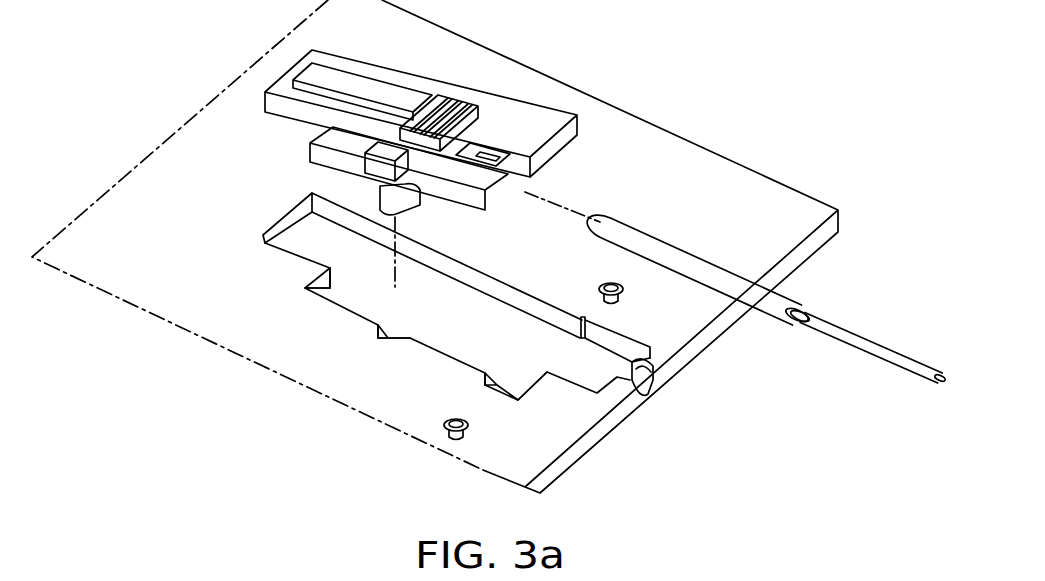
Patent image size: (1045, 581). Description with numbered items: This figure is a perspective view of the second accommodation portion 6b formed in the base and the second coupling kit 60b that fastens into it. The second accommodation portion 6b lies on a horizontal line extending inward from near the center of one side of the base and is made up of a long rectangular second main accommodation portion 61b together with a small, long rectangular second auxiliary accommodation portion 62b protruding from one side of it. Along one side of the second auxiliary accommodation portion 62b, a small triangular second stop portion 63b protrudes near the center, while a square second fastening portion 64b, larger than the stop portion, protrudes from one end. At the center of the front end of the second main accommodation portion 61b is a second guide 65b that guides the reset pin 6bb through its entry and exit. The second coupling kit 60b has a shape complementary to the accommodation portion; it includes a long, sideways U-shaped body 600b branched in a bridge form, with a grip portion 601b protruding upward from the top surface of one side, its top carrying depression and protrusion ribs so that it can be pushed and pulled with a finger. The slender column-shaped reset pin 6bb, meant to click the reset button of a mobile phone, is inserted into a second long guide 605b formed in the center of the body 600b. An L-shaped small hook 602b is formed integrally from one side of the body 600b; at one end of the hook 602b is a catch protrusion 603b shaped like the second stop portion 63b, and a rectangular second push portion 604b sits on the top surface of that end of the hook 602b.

The second accommodation portion 6b is at (250, 255).
The second main accommodation portion 61b is at (307, 245).
The second auxiliary accommodation portion 62b is at (347, 302).
The second stop portion 63b is at (390, 337).
The second fastening portion 64b is at (507, 388).
The second guide 65b is at (660, 388).
The reset pin 6bb is at (703, 265).
The second coupling kit 60b is at (512, 115).
The body 600b is at (350, 72).
The grip portion 601b is at (462, 117).
The hook 602b is at (322, 166).
The catch protrusion 603b is at (310, 243).
The second push portion 604b is at (427, 185).
The second long guide 605b is at (373, 115).